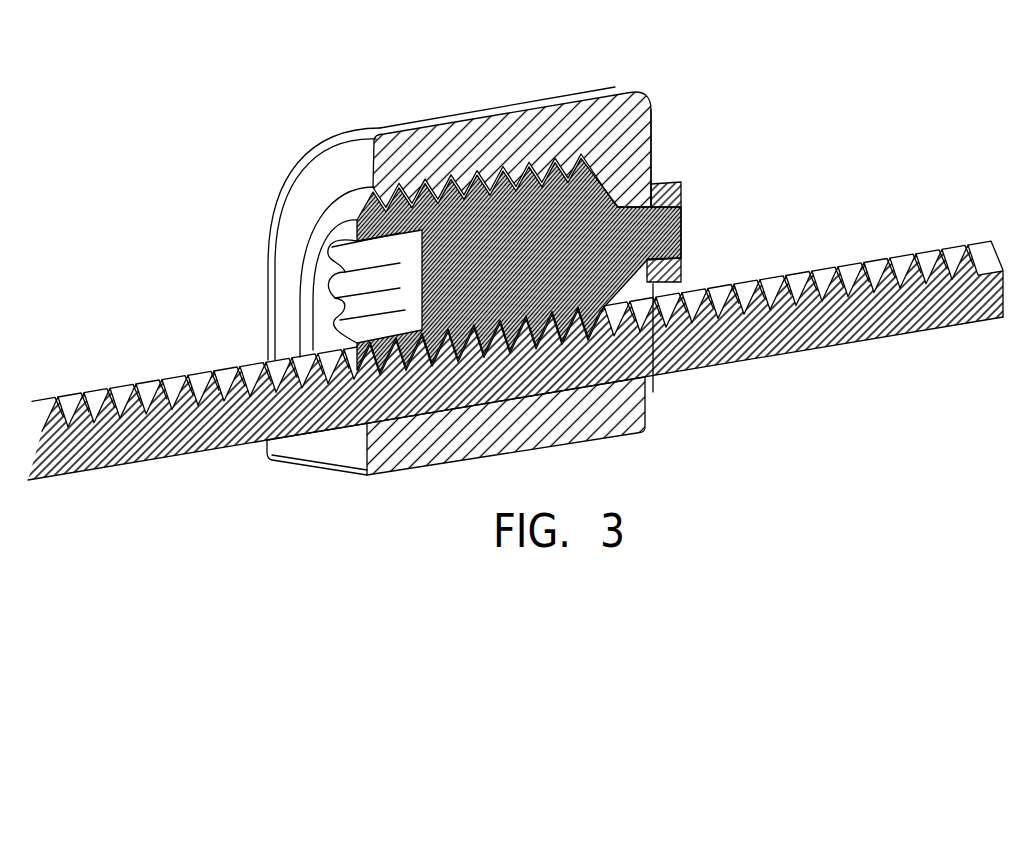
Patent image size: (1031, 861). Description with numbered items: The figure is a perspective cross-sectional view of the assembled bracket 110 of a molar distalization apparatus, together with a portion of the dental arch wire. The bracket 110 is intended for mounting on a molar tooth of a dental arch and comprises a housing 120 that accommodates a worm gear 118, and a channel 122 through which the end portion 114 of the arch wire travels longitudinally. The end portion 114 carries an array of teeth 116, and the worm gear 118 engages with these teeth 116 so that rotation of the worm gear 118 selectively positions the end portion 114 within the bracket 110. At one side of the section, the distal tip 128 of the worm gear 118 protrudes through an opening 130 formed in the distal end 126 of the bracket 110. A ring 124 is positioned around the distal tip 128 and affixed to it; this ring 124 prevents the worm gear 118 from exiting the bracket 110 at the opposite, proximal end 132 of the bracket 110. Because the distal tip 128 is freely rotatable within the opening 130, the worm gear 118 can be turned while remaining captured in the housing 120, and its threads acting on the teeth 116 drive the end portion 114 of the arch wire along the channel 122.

The bracket 110 is at (483, 274).
The end portion 114 is at (756, 357).
The teeth 116 is at (166, 378).
The worm gear 118 is at (449, 224).
The housing 120 is at (424, 129).
The channel 122 is at (405, 418).
The ring 124 is at (681, 178).
The distal end 126 is at (652, 141).
The distal tip 128 is at (682, 227).
The opening 130 is at (653, 392).
The proximal end 132 is at (268, 272).